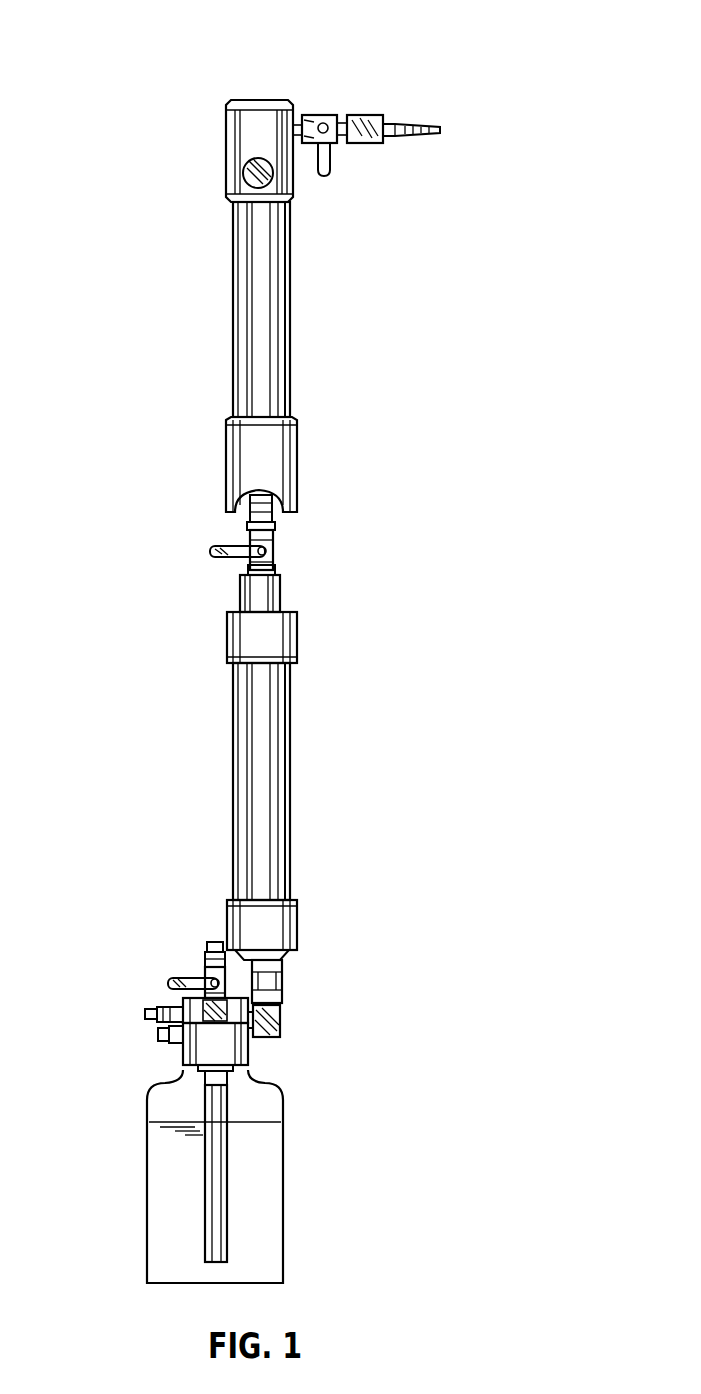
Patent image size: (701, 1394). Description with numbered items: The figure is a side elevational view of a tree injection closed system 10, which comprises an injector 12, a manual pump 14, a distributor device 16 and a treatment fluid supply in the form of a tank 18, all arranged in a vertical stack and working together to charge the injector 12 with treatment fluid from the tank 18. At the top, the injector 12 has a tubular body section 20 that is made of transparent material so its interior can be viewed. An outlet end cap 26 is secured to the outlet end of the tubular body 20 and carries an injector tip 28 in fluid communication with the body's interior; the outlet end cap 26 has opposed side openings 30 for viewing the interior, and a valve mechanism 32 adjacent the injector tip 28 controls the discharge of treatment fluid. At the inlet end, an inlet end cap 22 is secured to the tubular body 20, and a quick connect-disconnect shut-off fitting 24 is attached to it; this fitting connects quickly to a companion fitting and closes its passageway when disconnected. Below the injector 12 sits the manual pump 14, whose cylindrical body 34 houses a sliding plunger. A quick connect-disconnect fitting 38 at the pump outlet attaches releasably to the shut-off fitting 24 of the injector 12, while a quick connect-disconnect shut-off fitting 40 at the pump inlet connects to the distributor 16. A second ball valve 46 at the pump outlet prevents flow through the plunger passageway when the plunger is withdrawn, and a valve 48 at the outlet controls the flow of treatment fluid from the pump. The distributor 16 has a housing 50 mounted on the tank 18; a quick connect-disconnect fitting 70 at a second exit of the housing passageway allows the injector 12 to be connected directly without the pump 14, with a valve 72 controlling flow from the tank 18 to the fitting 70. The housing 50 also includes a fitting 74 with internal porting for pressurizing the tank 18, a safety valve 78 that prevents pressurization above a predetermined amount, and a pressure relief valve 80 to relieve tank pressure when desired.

The tree injection closed system 10 is at (408, 681).
The injector 12 is at (300, 327).
The manual pump 14 is at (300, 802).
The distributor device 16 is at (262, 1052).
The tank 18 is at (295, 1235).
The tubular body section 20 is at (291, 252).
The inlet end cap 22 is at (298, 450).
The quick connect-disconnect shut-off fitting 24 is at (191, 517).
The outlet end cap 26 is at (226, 135).
The injector tip 28 is at (377, 115).
The opposed side openings 30 is at (244, 173).
The valve mechanism 32 is at (327, 115).
The cylindrical body 34 is at (233, 766).
The quick connect-disconnect fitting 38 is at (272, 513).
The quick connect-disconnect shut-off fitting 40 is at (283, 967).
The second ball valve 46 is at (240, 596).
The valve 48 is at (273, 557).
The housing 50 is at (182, 1060).
The quick connect-disconnect fitting 70 is at (213, 942).
The valve 72 is at (208, 978).
The fitting 74 is at (150, 1008).
The safety valve 78 is at (283, 1010).
The pressure relief valve 80 is at (158, 1032).